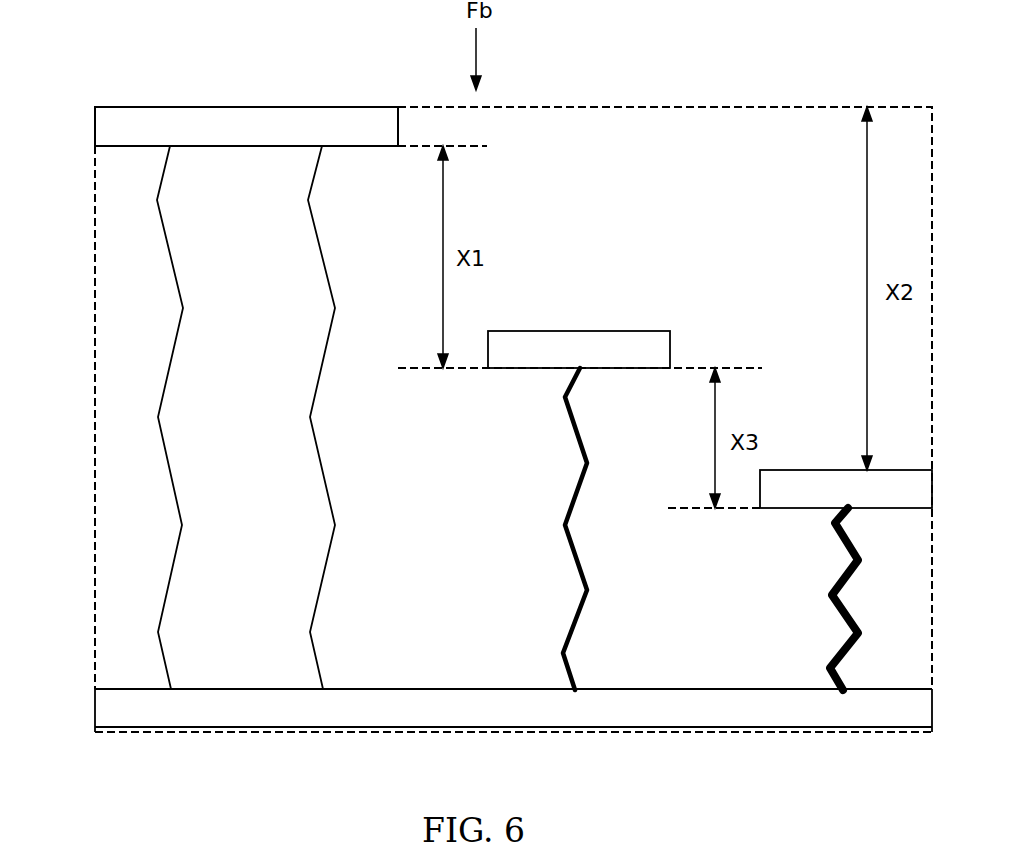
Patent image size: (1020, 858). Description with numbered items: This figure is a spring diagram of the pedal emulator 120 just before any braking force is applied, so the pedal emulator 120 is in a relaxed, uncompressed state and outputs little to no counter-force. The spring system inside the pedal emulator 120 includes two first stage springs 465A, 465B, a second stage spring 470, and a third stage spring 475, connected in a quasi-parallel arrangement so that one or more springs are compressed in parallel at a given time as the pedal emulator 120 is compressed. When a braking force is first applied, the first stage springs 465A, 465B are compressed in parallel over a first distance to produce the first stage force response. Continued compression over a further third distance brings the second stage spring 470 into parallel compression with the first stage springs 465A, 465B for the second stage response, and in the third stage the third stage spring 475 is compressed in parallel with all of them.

The pedal emulator 120 is at (94, 420).
The first stage spring 465A is at (172, 473).
The first stage spring 465B is at (324, 473).
The second stage spring 470 is at (581, 560).
The third stage spring 475 is at (859, 578).